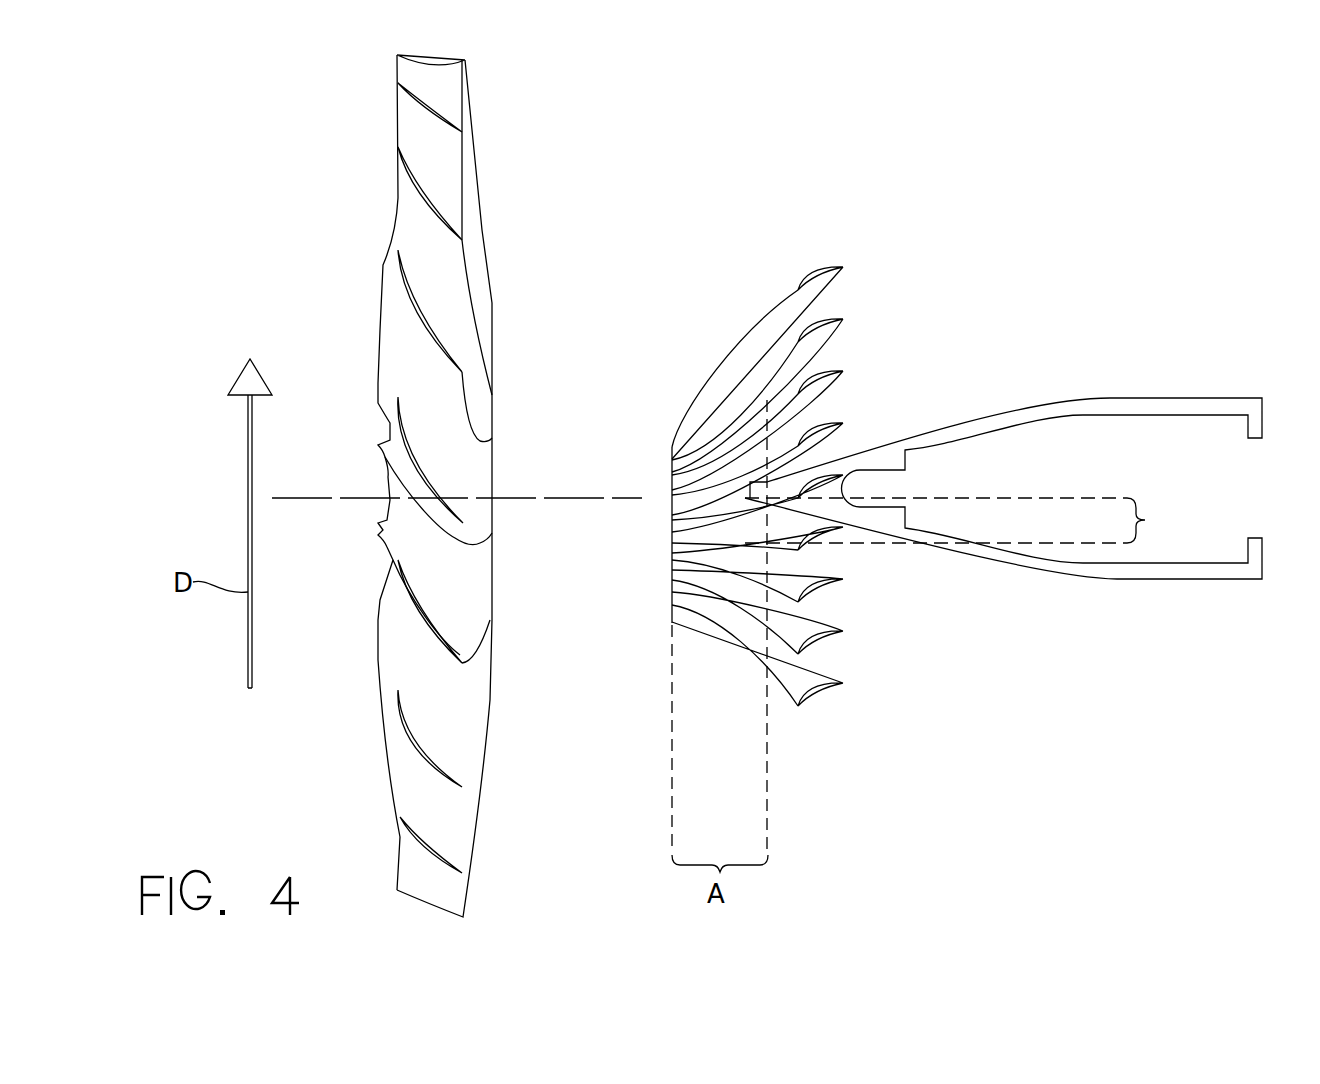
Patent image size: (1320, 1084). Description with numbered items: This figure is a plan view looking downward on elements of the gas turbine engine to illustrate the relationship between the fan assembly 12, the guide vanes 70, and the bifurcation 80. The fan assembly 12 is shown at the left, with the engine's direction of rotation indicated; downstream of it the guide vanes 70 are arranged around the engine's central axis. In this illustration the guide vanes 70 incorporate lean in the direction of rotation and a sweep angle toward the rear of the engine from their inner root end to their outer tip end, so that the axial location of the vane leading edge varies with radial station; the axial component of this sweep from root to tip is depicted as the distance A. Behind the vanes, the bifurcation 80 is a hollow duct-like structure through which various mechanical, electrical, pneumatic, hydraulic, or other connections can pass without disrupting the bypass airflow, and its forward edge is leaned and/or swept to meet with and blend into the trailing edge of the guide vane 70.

The fan assembly 12 is at (508, 212).
The guide vanes 70 is at (745, 343).
The bifurcation 80 is at (1182, 398).